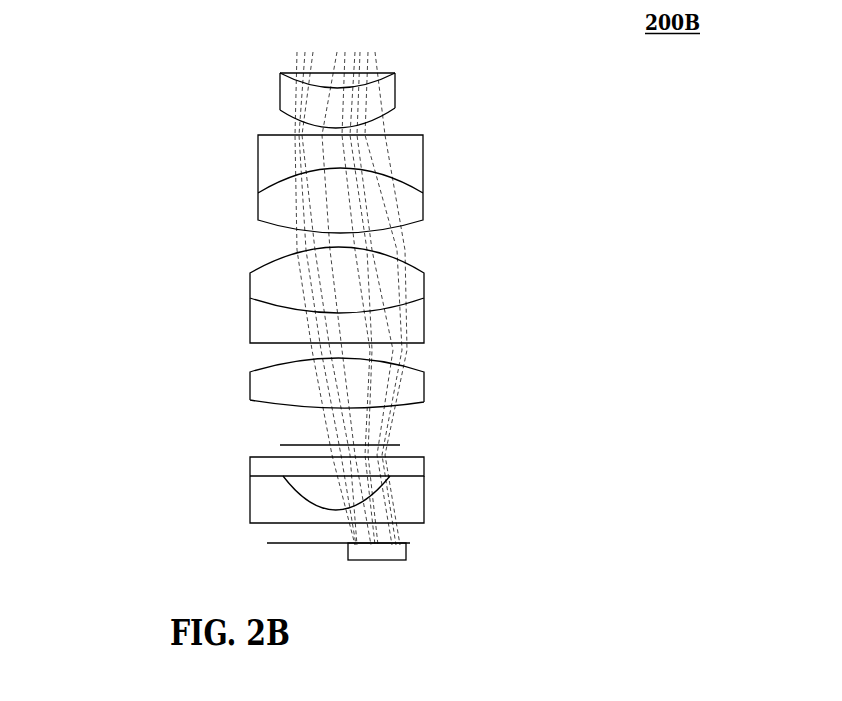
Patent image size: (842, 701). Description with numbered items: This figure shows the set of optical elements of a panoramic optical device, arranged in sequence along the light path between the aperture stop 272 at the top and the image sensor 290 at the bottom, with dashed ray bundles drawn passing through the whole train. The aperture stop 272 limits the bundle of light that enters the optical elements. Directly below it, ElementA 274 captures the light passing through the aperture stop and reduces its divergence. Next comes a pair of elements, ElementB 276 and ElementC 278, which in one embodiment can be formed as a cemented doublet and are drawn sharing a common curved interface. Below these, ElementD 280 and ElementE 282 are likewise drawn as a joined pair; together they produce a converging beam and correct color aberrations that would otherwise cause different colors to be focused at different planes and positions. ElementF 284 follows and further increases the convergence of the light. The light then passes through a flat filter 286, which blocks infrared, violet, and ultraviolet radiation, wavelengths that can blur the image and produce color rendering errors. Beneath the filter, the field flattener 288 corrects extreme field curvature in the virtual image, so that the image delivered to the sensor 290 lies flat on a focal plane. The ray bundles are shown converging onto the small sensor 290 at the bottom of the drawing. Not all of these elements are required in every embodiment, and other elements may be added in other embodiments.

The aperture stop 272 is at (307, 73).
The ElementA 274 is at (288, 100).
The ElementB 276 is at (270, 164).
The ElementC 278 is at (281, 200).
The ElementD 280 is at (265, 283).
The ElementE 282 is at (262, 329).
The ElementF 284 is at (265, 384).
The flat filter 286 is at (268, 467).
The field flattener 288 is at (270, 513).
The image sensor 290 is at (373, 548).